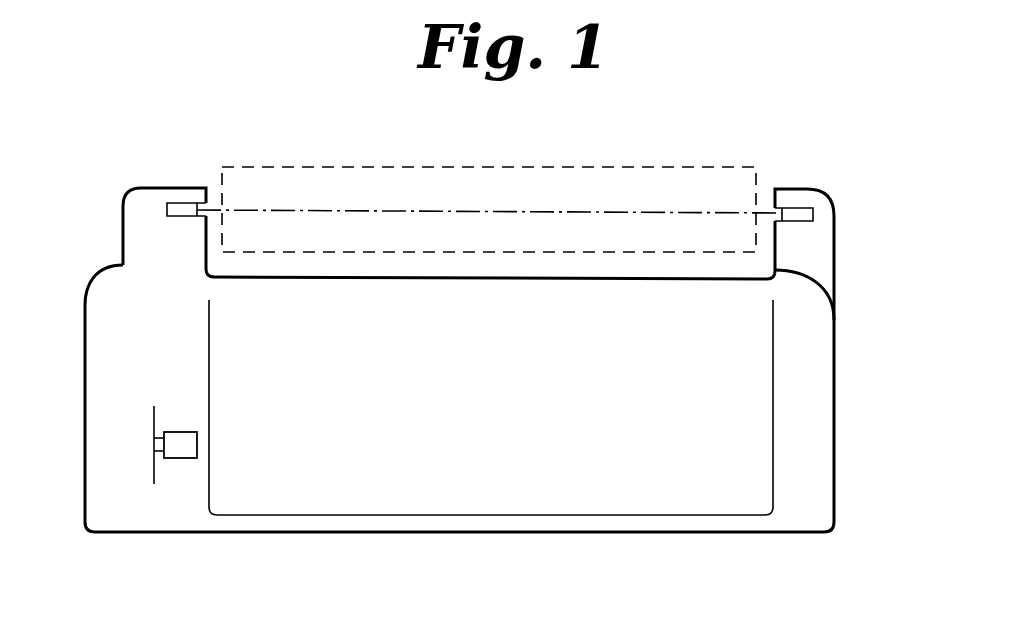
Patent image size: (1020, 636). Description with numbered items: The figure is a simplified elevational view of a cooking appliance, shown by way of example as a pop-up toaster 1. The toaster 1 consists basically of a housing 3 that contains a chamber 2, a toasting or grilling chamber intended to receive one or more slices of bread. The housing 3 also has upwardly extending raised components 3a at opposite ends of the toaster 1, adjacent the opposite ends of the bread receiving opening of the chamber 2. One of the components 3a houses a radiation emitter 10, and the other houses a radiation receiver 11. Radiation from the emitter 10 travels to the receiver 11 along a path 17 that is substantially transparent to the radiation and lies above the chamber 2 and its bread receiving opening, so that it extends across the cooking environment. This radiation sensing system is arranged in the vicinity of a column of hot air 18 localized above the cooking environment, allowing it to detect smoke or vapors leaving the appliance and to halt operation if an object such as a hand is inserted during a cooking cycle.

The toaster 1 is at (482, 402).
The chamber 2 is at (335, 506).
The housing 3 is at (482, 393).
The raised components 3a is at (140, 239).
The radiation emitter 10 is at (182, 210).
The radiation receiver 11 is at (798, 214).
The path 17 is at (501, 212).
The column of hot air 18 is at (348, 178).